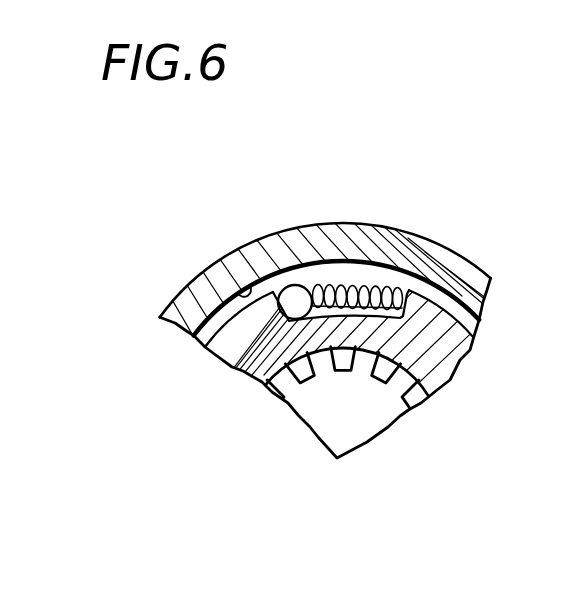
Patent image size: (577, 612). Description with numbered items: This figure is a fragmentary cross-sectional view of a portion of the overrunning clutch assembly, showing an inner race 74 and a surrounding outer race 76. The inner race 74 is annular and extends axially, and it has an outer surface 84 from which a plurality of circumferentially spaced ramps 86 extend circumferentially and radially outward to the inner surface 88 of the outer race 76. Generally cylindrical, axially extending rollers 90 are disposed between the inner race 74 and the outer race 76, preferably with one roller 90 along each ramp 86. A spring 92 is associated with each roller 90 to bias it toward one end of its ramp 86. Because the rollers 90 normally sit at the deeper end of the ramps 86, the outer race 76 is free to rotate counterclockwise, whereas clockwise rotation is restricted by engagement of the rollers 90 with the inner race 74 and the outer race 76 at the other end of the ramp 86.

The inner race 74 is at (457, 372).
The outer race 76 is at (443, 247).
The outer surface 84 is at (178, 296).
The ramp 86 is at (355, 303).
The inner surface 88 is at (247, 292).
The roller 90 is at (298, 292).
The spring 92 is at (374, 290).